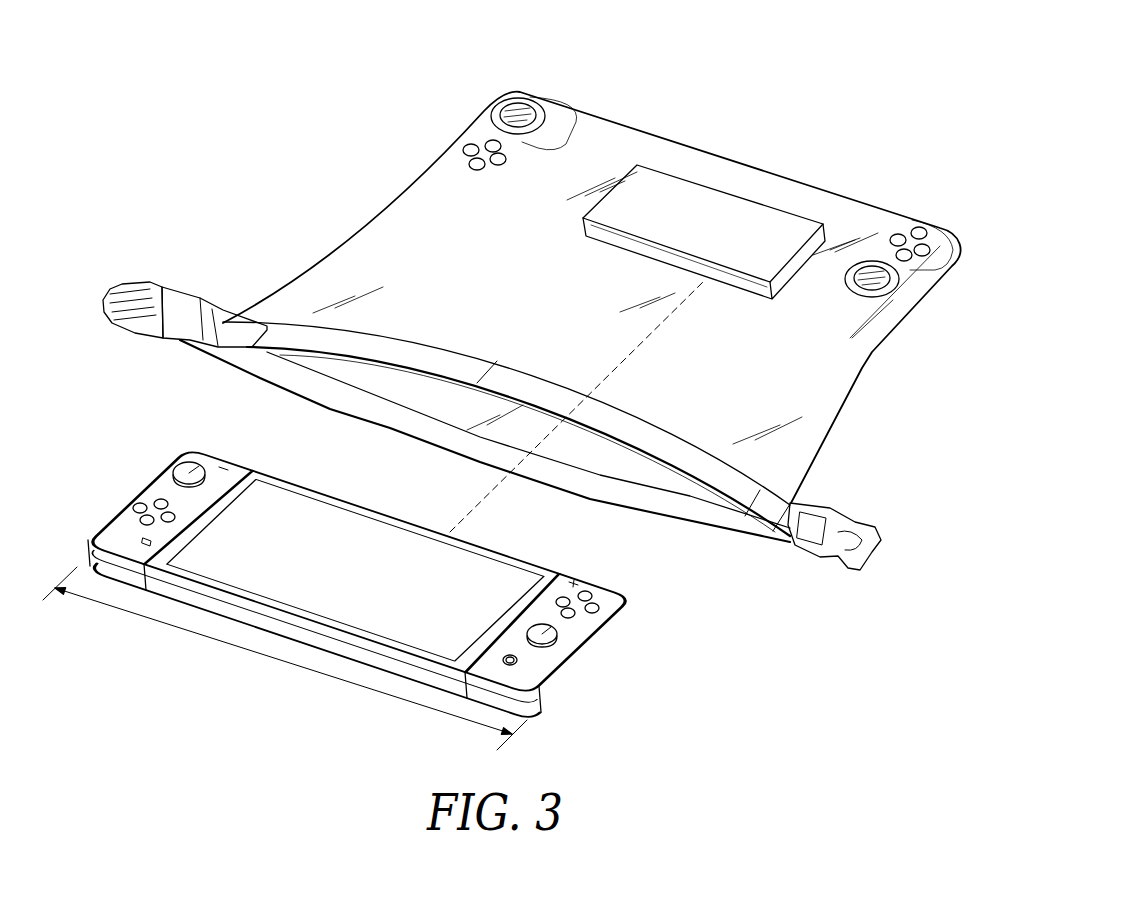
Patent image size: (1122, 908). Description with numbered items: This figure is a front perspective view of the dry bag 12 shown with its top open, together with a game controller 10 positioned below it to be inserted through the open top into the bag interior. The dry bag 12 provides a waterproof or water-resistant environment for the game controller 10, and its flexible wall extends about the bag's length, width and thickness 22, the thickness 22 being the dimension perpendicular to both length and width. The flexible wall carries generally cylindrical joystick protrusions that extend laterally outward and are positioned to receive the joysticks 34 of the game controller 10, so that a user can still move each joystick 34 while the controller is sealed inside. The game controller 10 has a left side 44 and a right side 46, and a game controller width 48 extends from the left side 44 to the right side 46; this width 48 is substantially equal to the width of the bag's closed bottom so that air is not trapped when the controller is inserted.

The game controller 10 is at (382, 582).
The dry bag 12 is at (801, 131).
The thickness 22 is at (477, 392).
The joystick 34 is at (188, 466).
The left side 44 is at (113, 524).
The right side 46 is at (535, 712).
The game controller width 48 is at (255, 652).